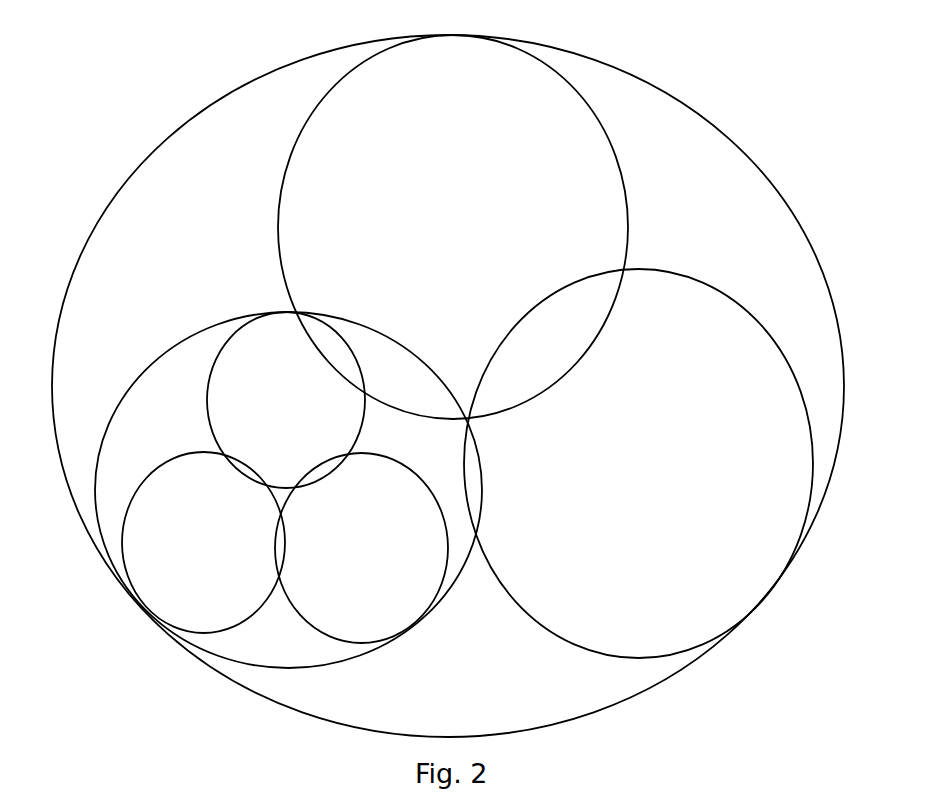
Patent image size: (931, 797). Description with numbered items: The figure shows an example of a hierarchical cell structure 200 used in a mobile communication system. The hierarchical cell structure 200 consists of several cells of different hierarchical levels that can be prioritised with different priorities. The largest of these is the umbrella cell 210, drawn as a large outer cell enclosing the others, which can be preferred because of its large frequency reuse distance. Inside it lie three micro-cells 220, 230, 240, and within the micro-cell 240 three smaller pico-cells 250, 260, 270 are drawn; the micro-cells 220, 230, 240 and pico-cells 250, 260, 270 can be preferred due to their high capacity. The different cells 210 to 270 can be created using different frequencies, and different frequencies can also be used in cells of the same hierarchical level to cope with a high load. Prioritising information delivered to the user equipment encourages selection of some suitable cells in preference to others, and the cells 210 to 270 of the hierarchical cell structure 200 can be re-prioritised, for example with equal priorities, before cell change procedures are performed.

The hierarchical cell structure 200 is at (167, 66).
The umbrella cell 210 is at (148, 156).
The micro-cell 220 is at (292, 157).
The micro-cell 230 is at (686, 275).
The micro-cell 240 is at (221, 323).
The pico-cell 250 is at (182, 453).
The pico-cell 260 is at (209, 400).
The pico-cell 270 is at (375, 457).